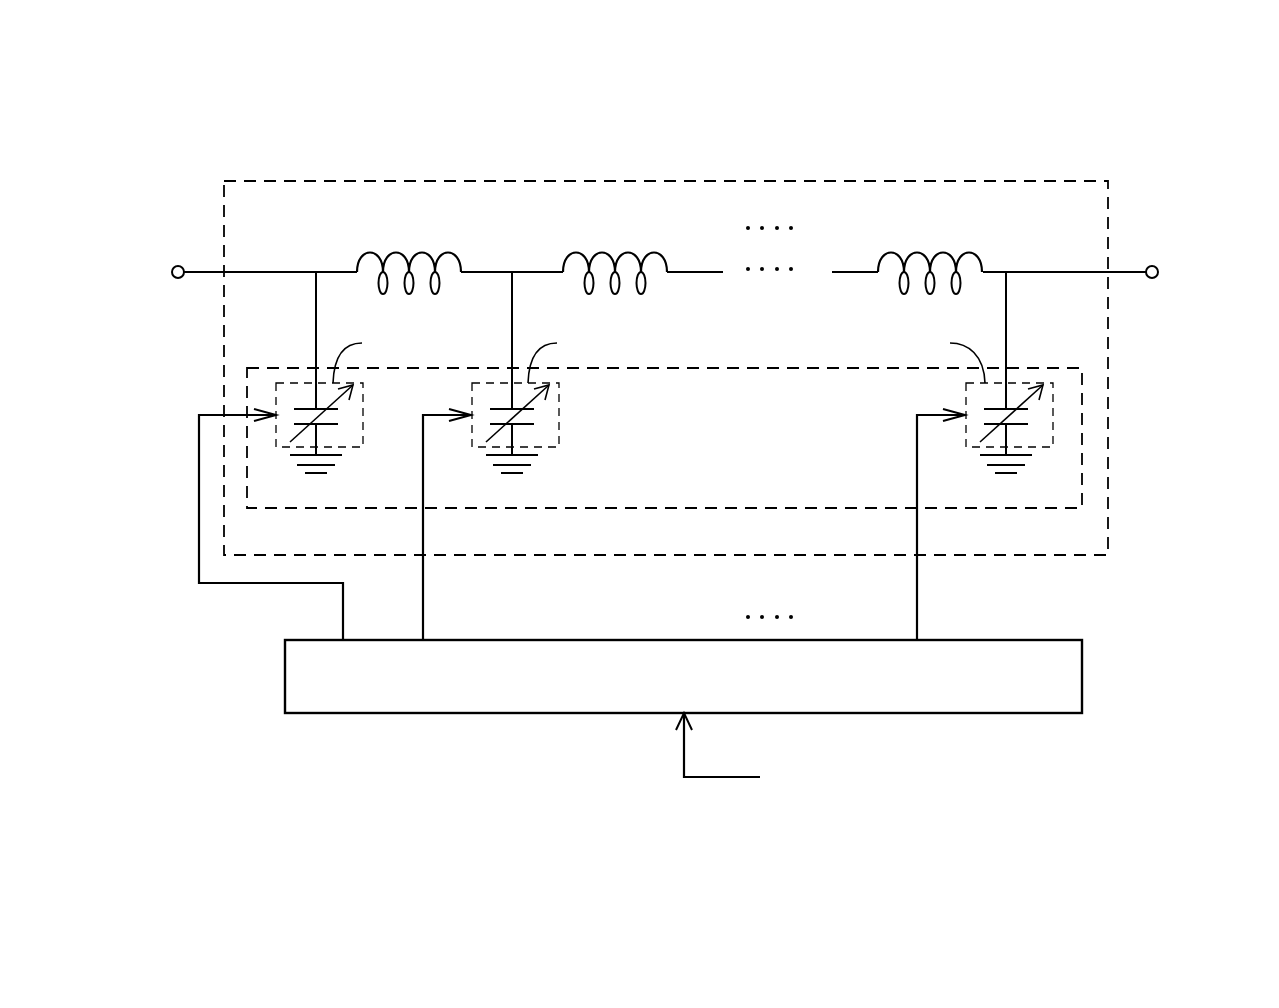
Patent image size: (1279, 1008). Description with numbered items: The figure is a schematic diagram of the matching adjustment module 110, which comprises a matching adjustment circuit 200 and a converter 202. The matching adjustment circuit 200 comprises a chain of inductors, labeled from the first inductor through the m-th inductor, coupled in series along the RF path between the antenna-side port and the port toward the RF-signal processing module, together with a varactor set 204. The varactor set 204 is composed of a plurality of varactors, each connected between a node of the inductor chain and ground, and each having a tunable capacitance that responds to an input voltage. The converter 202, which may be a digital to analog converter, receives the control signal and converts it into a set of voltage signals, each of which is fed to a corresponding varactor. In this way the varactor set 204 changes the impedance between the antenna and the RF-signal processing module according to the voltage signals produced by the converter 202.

The matching adjustment module 110 is at (327, 114).
The matching adjustment circuit 200 is at (1032, 181).
The converter 202 is at (1082, 675).
The varactor set 204 is at (1082, 439).